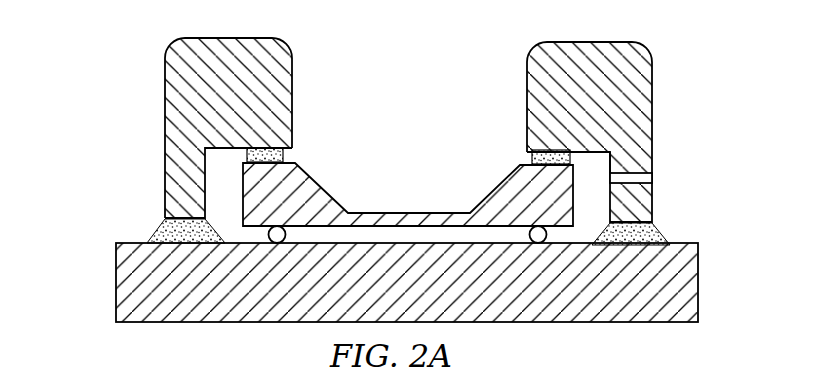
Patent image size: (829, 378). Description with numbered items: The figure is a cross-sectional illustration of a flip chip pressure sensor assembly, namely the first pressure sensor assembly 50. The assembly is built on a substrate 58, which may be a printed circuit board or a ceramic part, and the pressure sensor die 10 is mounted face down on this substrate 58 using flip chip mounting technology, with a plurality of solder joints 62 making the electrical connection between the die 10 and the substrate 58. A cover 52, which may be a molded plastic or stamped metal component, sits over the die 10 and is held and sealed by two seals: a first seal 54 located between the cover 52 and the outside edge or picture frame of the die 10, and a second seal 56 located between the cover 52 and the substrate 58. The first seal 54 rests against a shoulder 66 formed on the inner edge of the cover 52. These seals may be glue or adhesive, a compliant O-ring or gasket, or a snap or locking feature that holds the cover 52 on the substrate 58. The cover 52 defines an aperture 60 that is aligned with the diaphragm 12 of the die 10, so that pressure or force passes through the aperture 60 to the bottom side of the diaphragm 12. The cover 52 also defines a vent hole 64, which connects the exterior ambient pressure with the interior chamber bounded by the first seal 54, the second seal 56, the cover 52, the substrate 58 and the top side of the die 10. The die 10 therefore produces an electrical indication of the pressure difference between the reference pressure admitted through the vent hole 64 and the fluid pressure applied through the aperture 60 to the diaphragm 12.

The first pressure sensor assembly 50 is at (380, 180).
The cover 52 is at (653, 88).
The first seal 54 is at (287, 157).
The second seal 56 is at (156, 219).
The substrate 58 is at (116, 275).
The aperture 60 is at (415, 70).
The solder joints 62 is at (540, 246).
The vent hole 64 is at (657, 177).
The shoulder 66 is at (593, 170).
The pressure sensor die 10 is at (243, 183).
The diaphragm 12 is at (393, 226).